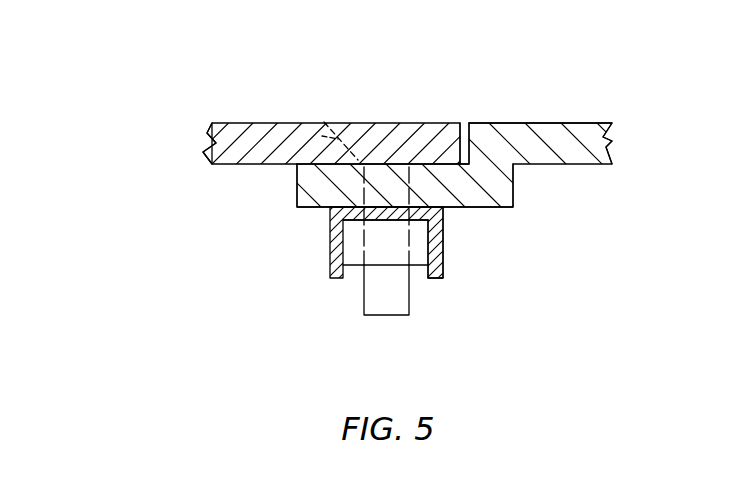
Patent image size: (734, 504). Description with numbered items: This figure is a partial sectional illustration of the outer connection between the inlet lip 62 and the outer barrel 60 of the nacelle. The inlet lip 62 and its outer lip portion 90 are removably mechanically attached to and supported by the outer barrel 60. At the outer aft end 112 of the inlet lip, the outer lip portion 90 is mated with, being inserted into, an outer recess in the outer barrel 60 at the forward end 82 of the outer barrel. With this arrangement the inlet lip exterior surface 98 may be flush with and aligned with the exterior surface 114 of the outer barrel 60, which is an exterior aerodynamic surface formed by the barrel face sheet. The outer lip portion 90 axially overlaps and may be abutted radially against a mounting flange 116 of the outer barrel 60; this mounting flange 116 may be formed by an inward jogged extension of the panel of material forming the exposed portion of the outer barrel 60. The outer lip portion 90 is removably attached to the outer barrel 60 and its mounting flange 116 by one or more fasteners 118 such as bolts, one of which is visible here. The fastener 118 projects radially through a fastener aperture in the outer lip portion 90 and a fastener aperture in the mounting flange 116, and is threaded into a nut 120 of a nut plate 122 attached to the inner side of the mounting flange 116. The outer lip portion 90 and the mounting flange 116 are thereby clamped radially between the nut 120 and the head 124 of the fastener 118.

The outer barrel 60 is at (620, 140).
The inlet lip 62 is at (143, 148).
The outer lip portion 90 is at (190, 145).
The forward end of the outer barrel 82 is at (297, 192).
The inlet lip exterior surface 98 is at (240, 123).
The outer aft end of the inlet lip 112 is at (465, 122).
The exterior surface of the outer barrel 114 is at (582, 122).
The mounting flange 116 is at (308, 208).
The fastener 118 is at (377, 326).
The nut 120 is at (417, 267).
The nut plate 122 is at (443, 262).
The head of the fastener 124 is at (325, 122).